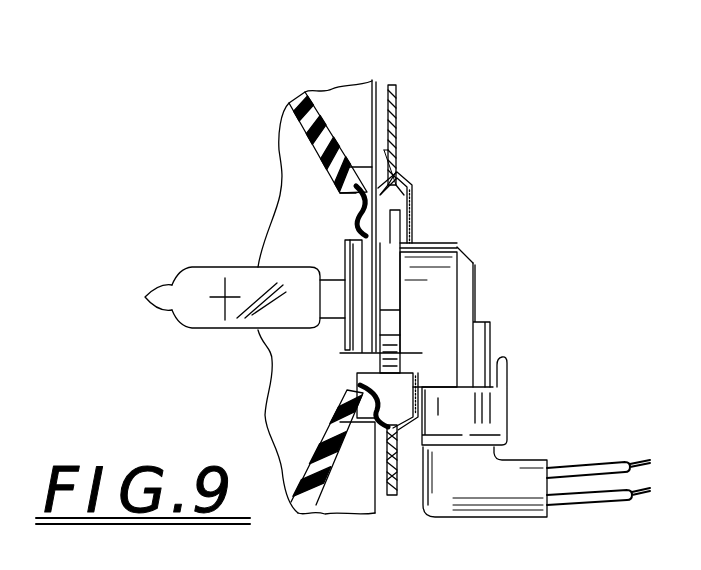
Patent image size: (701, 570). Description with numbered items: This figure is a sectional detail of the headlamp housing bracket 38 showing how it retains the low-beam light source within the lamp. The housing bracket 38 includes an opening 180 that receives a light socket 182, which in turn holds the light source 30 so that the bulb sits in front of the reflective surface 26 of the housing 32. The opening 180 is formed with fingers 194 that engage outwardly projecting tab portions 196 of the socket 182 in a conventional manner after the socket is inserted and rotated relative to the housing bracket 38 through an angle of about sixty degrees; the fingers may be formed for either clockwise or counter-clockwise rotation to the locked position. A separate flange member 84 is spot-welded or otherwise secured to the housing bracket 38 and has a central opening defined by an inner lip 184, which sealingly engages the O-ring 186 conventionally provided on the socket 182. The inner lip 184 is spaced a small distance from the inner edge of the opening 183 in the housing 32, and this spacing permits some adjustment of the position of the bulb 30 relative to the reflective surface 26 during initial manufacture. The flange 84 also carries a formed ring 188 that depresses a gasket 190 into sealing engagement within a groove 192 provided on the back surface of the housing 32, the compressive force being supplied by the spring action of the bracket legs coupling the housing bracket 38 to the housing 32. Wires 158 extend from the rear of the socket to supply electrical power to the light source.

The reflective surface 26 is at (300, 162).
The light source 30 is at (216, 324).
The housing 32 is at (352, 82).
The housing bracket 38 is at (397, 96).
The flange member 84 is at (362, 80).
The wires 158 is at (575, 500).
The opening 180 is at (412, 213).
The light socket 182 is at (436, 297).
The opening 183 is at (356, 240).
The inner lip 184 is at (360, 384).
The O-ring 186 is at (350, 250).
The formed ring 188 is at (399, 428).
The gasket 190 is at (330, 492).
The groove 192 is at (398, 140).
The fingers 194 is at (392, 364).
The tab portions 196 is at (388, 338).